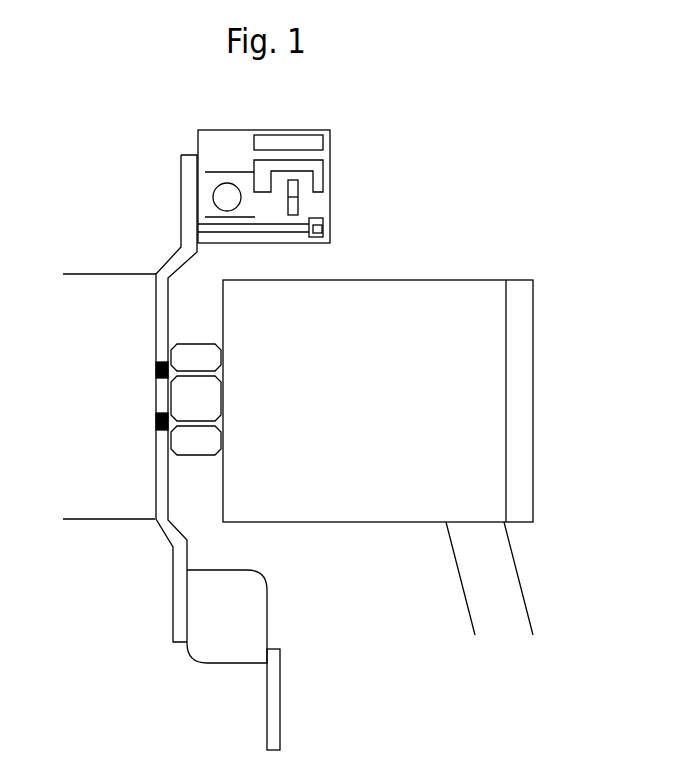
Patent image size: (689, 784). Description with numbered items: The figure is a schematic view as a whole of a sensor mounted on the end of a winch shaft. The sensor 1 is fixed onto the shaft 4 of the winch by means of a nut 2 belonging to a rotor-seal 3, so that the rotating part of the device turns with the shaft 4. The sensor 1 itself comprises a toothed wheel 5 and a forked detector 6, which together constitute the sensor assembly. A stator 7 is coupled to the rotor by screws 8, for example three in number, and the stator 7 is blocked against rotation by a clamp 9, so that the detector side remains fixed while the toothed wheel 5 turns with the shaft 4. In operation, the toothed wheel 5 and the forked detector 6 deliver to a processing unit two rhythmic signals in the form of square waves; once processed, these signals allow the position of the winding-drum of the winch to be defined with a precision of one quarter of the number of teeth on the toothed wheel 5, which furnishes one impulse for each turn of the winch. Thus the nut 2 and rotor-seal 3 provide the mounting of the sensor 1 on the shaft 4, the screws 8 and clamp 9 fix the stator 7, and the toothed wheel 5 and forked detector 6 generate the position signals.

The sensor 1 is at (188, 189).
The nut 2 is at (192, 354).
The rotor-seal 3 is at (522, 302).
The shaft 4 is at (70, 397).
The toothed wheel 5 is at (295, 205).
The forked detector 6 is at (315, 168).
The stator 7 is at (252, 600).
The screws 8 is at (322, 221).
The clamp 9 is at (270, 719).